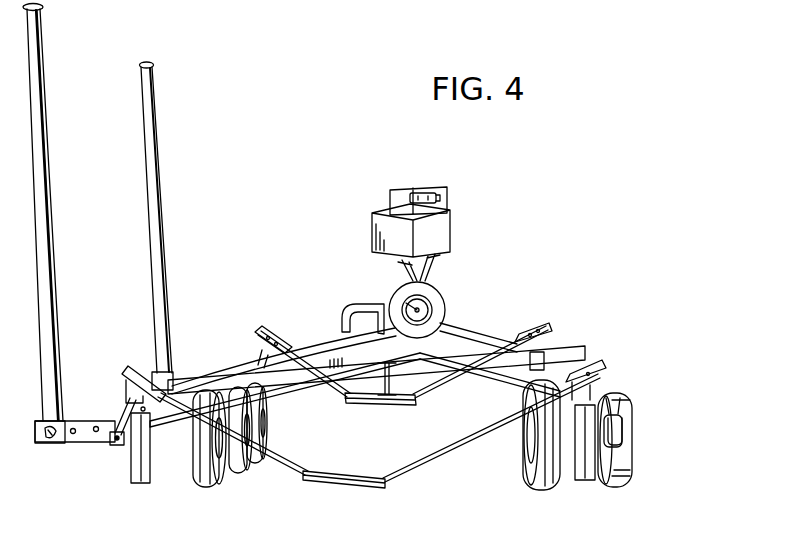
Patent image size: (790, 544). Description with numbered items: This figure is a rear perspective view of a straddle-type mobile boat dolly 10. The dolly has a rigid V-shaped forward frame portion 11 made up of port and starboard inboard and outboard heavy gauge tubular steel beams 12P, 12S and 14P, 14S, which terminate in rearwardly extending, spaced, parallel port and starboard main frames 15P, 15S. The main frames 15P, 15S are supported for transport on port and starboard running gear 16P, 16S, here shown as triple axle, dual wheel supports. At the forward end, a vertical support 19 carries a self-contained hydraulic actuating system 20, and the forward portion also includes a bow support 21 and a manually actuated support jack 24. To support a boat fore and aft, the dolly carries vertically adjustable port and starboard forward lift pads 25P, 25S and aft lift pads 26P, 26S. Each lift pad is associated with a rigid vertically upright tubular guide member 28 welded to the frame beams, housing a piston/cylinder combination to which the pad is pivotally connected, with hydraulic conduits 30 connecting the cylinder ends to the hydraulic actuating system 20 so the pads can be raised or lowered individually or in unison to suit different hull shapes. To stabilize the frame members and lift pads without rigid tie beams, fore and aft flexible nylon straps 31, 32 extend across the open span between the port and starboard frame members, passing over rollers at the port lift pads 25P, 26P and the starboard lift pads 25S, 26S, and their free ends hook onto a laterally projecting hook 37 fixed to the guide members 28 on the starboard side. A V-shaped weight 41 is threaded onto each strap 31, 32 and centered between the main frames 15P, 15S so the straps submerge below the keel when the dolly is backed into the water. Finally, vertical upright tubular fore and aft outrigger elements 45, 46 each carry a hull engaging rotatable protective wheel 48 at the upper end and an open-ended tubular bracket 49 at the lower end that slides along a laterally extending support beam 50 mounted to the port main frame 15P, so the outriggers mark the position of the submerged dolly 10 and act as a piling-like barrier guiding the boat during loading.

The boat dolly 10 is at (526, 276).
The forward frame portion 11 is at (336, 393).
The port inboard beam 12P is at (287, 376).
The starboard inboard beam 12S is at (503, 370).
The port outboard beam 14P is at (320, 350).
The starboard outboard beam 14S is at (485, 348).
The port main frame 15P is at (170, 478).
The starboard main frame 15S is at (558, 420).
The port running gear 16P is at (254, 488).
The starboard running gear 16S is at (644, 457).
The vertical support 19 is at (410, 278).
The hydraulic actuating system 20 is at (392, 196).
The bow support 21 is at (378, 222).
The support jack 24 is at (383, 313).
The port forward lift pad 25P is at (258, 330).
The starboard forward lift pad 25S is at (547, 328).
The port aft lift pad 26P is at (130, 373).
The starboard aft lift pad 26S is at (600, 365).
The tubular guide member 28 is at (130, 472).
The hydraulic conduits 30 is at (433, 270).
The fore flexible strap 31 is at (438, 392).
The aft flexible strap 32 is at (452, 456).
The hook 37 is at (626, 446).
The V-shaped weight 41 is at (377, 408).
The fore outrigger element 45 is at (153, 145).
The aft outrigger element 46 is at (42, 123).
The protective wheel 48 is at (41, 5).
The tubular bracket 49 is at (47, 443).
The support beam 50 is at (78, 438).